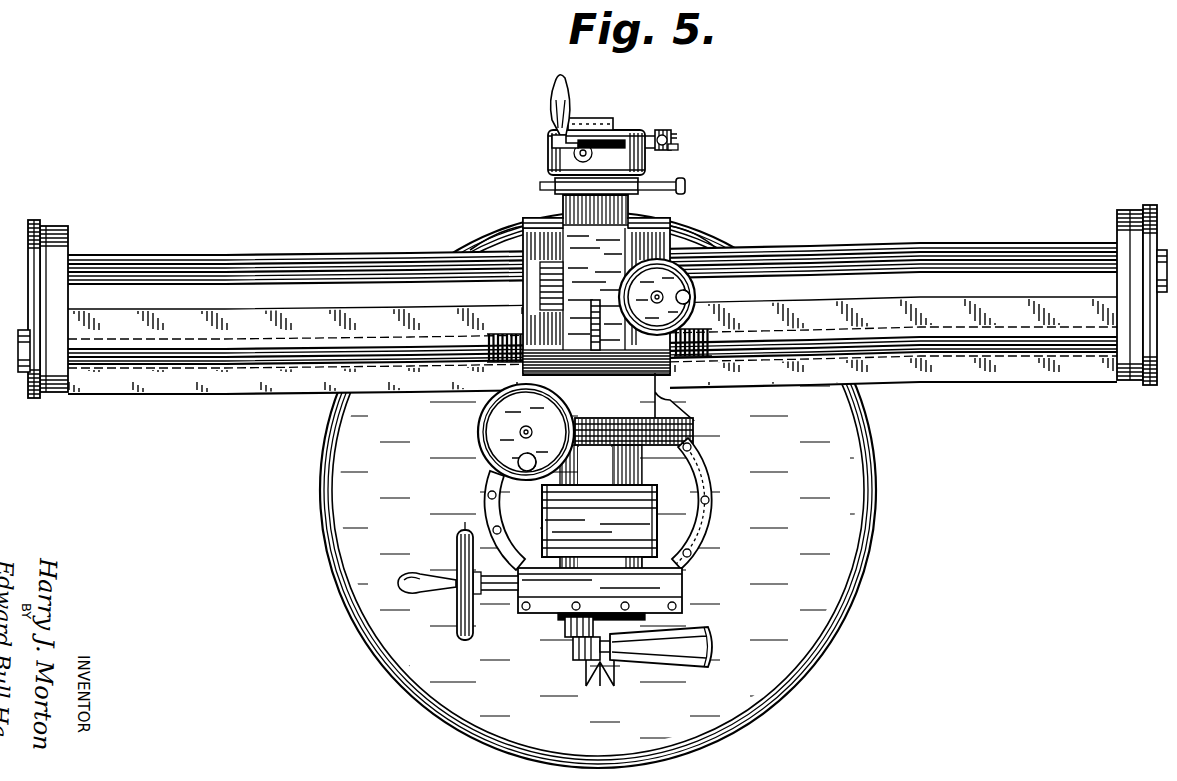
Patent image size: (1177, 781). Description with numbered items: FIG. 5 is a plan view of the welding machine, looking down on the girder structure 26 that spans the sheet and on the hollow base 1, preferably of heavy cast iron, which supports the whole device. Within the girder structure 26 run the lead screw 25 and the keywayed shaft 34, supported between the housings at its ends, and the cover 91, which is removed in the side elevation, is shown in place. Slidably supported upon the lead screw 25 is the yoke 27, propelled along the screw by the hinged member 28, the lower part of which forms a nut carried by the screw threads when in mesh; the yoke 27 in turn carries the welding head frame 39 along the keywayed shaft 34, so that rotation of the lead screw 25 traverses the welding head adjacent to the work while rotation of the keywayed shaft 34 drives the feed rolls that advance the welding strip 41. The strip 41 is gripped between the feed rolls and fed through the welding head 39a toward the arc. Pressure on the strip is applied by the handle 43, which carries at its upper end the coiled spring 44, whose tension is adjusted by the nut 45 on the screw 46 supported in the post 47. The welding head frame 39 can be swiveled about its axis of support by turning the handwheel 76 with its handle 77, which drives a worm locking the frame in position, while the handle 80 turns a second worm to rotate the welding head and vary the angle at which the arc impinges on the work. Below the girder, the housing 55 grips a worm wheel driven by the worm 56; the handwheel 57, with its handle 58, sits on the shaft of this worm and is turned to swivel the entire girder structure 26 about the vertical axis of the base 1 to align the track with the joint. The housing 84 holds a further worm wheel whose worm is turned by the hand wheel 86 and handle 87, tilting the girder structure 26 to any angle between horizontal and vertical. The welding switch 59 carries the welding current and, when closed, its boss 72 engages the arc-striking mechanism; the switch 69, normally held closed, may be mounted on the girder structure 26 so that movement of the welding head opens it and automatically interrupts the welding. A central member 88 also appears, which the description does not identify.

The hollow base 1 is at (856, 530).
The lead screw 25 is at (290, 352).
The girder structure 26 is at (967, 380).
The yoke 27 is at (535, 222).
The hinged member 28 is at (596, 310).
The keywayed shaft 34 is at (840, 246).
The welding head frame 39 is at (642, 210).
The welding head 39a is at (643, 163).
The welding strip 41 is at (577, 153).
The handle 43 is at (557, 82).
The coiled spring 44 is at (597, 142).
The nut 45 is at (673, 137).
The screw 46 is at (677, 147).
The post 47 is at (659, 135).
The housing 55 is at (700, 506).
The worm 56 is at (505, 592).
The handwheel 57 is at (467, 522).
The handle 58 is at (398, 583).
The welding switch 59 is at (600, 683).
The switch 69 is at (632, 142).
The boss 72 is at (565, 629).
The handwheel 76 is at (690, 303).
The handle 77 is at (695, 292).
The handle 80 is at (688, 185).
The housing 84 is at (693, 425).
The hand wheel 86 is at (481, 422).
The handle 87 is at (516, 464).
The center block 88 is at (599, 515).
The cover 91 is at (30, 392).